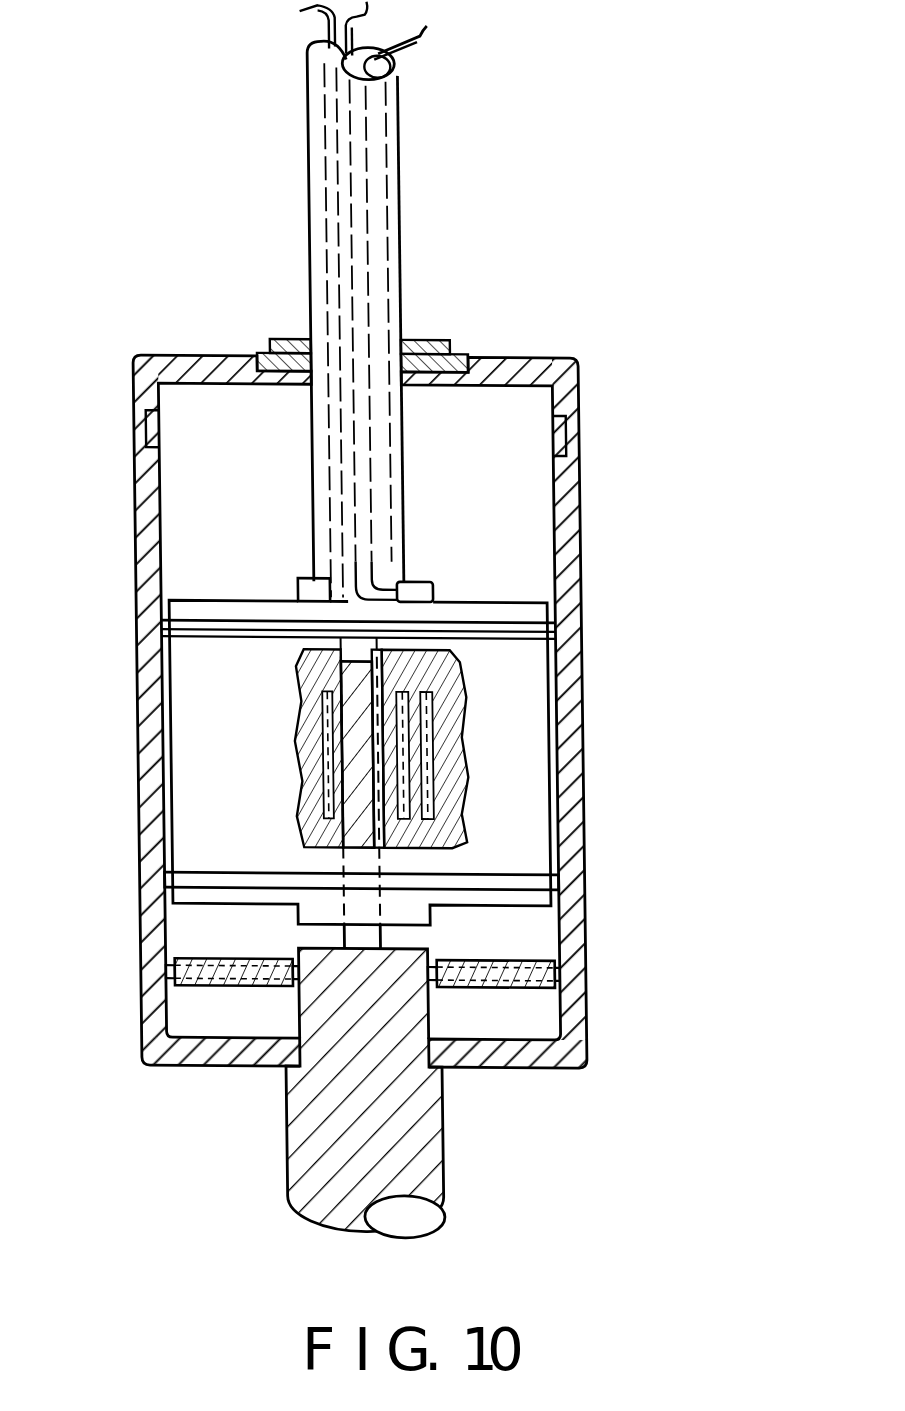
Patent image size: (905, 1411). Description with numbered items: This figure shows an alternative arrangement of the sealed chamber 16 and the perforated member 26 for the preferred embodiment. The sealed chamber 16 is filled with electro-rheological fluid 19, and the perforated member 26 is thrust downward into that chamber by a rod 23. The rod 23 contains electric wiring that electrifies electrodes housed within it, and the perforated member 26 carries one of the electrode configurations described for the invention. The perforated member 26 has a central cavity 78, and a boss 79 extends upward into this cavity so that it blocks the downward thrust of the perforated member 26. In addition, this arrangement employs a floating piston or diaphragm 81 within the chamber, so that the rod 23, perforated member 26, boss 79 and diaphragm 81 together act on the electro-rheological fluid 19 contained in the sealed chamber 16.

The sealed chamber 16 is at (250, 519).
The electro-rheological fluid 19 is at (491, 493).
The rod 23 is at (402, 256).
The perforated member 26 is at (375, 745).
The central cavity 78 is at (373, 653).
The boss 79 is at (354, 806).
The floating piston or diaphragm 81 is at (237, 967).